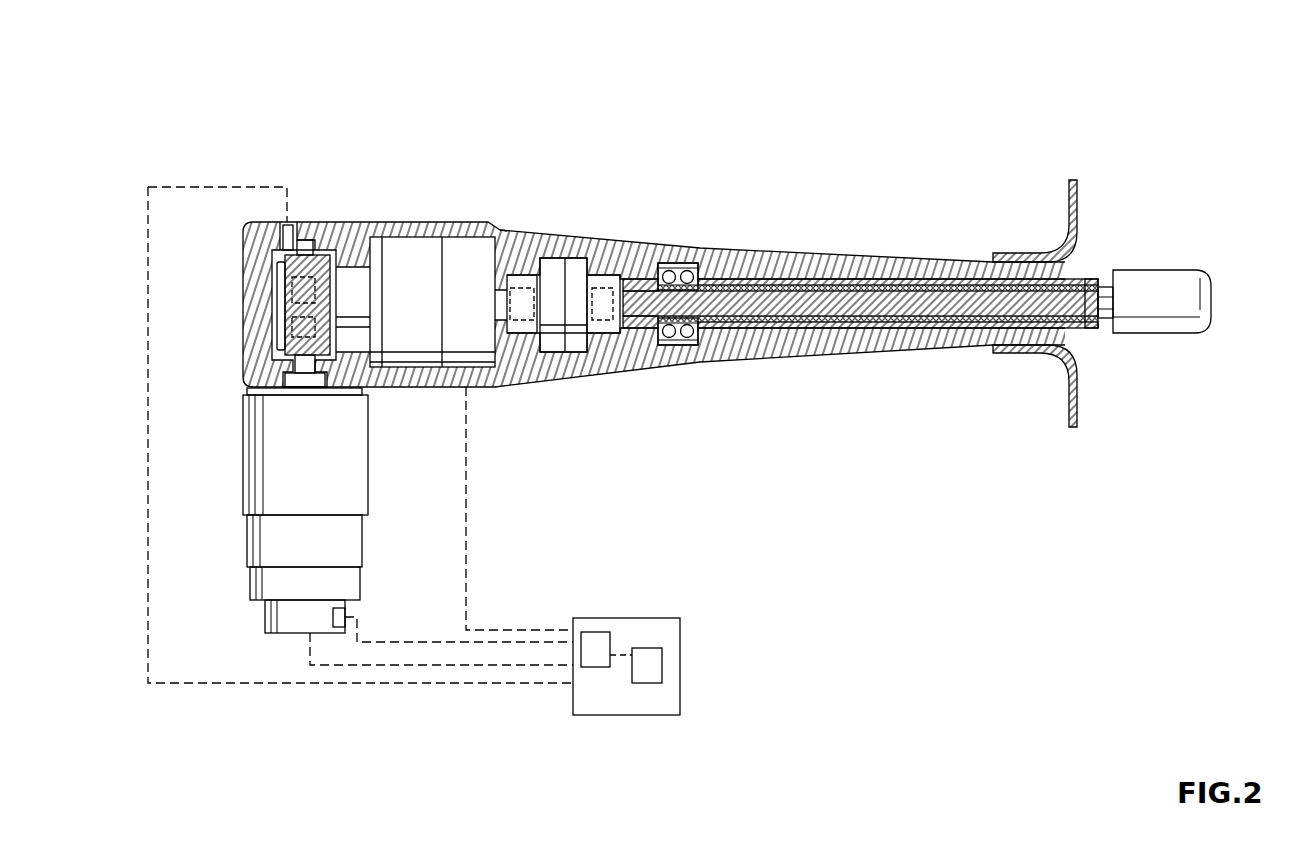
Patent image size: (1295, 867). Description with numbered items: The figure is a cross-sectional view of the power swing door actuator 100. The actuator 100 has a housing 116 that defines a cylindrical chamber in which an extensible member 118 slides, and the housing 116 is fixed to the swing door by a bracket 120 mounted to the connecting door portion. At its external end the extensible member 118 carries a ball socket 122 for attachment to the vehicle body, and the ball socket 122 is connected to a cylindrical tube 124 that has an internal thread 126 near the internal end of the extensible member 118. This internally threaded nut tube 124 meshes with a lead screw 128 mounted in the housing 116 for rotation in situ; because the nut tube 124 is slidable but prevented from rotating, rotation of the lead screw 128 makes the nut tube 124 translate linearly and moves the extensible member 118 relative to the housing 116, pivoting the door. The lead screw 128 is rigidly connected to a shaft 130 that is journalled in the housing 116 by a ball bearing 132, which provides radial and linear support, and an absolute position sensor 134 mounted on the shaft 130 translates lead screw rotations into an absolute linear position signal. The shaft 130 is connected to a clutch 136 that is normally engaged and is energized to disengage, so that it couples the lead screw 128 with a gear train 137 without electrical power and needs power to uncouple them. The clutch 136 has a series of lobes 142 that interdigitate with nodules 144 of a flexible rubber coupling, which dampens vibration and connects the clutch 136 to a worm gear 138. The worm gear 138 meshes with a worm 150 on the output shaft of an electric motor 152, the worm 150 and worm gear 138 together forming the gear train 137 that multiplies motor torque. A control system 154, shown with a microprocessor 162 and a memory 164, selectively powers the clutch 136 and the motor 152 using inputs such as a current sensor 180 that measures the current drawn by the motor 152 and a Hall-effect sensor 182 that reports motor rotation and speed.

The actuator 100 is at (263, 112).
The housing 116 is at (845, 258).
The extensible member 118 is at (1090, 270).
The bracket 120 is at (1080, 212).
The ball socket 122 is at (1180, 333).
The cylindrical tube 124 is at (1090, 327).
The internal thread 126 is at (747, 310).
The lead screw 128 is at (857, 310).
The shaft 130 is at (601, 320).
The ball bearing 132 is at (678, 260).
The absolute position sensor 134 is at (572, 268).
The clutch 136 is at (462, 260).
The gear train 137 is at (266, 253).
The worm gear 138 is at (277, 305).
The lobes 142 is at (310, 285).
The nodules 144 is at (303, 327).
The worm 150 is at (317, 257).
The electric motor 152 is at (368, 462).
The control system 154 is at (593, 618).
The microprocessor 162 is at (610, 632).
The memory 164 is at (655, 648).
The current sensor 180 is at (343, 608).
The Hall-effect sensor 182 is at (293, 227).